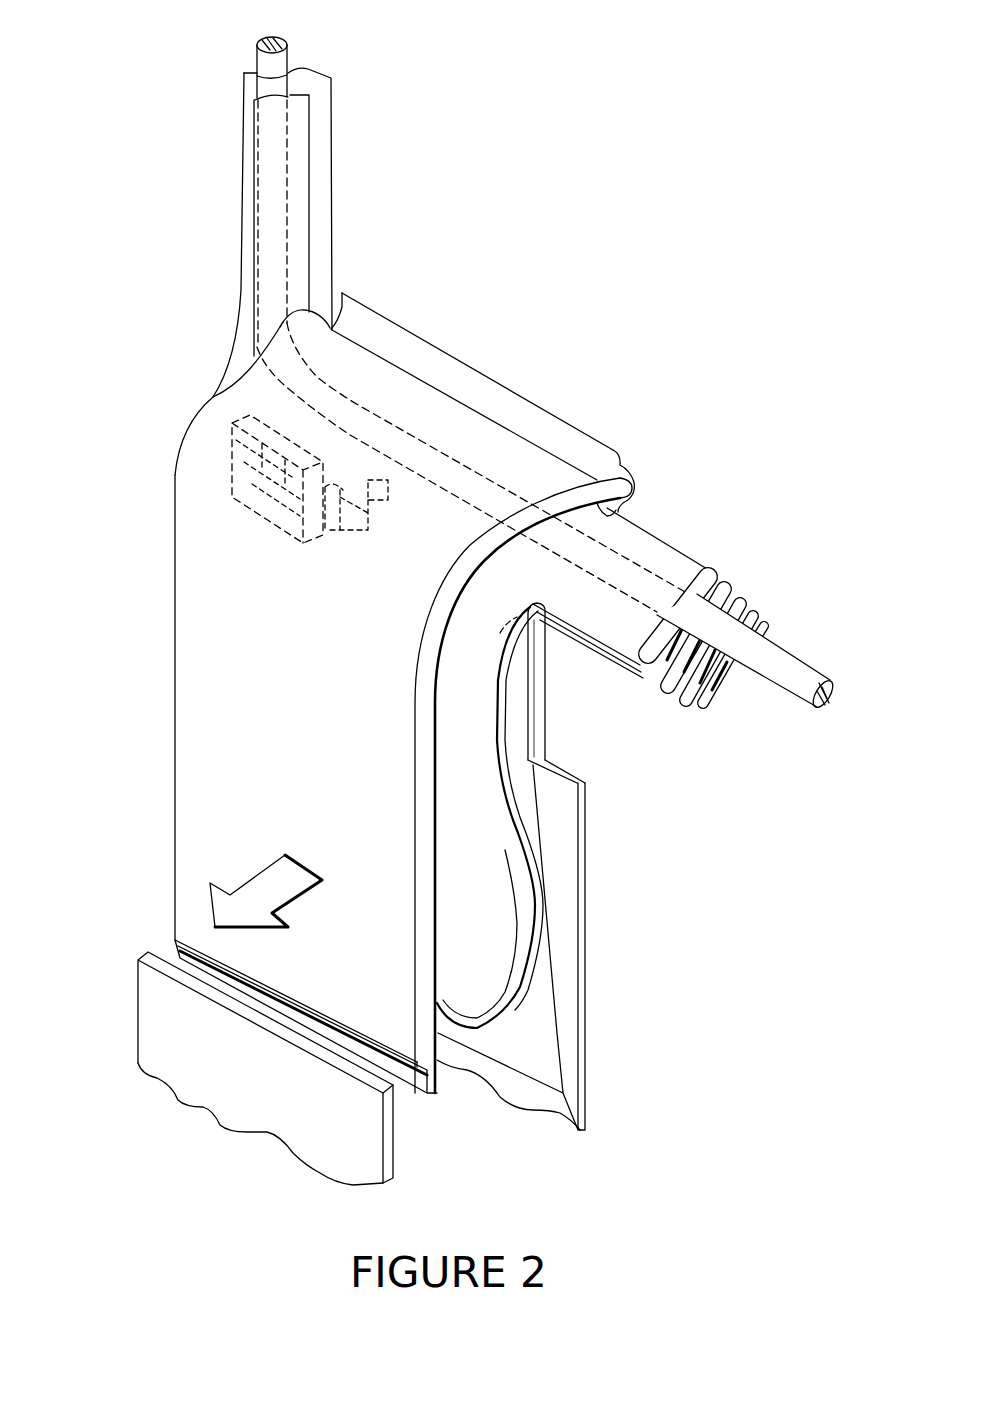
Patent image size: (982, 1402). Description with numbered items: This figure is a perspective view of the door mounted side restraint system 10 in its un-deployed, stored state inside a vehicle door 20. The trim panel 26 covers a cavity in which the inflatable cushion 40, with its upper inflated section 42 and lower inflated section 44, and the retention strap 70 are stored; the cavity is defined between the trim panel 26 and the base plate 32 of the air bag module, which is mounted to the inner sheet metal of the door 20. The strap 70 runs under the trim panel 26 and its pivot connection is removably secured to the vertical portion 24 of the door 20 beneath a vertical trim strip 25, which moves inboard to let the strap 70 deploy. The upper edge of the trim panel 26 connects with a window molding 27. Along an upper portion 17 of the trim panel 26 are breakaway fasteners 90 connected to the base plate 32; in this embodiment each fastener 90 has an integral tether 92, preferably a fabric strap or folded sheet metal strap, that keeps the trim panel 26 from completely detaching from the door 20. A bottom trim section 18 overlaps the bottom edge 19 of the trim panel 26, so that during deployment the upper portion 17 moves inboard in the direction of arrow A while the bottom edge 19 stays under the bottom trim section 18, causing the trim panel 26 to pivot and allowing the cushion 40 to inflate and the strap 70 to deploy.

The side restraint system 10 is at (136, 277).
The upper portion 17 is at (640, 487).
The bottom trim section 18 is at (248, 1115).
The bottom edge 19 is at (413, 1077).
The door 20 is at (587, 877).
The vertical portion 24 is at (320, 177).
The vertical trim strip 25 is at (255, 237).
The trim panel 26 is at (212, 713).
The window molding 27 is at (523, 420).
The base plate 32 is at (530, 1097).
The inflatable cushion 40 is at (673, 707).
The upper inflated section 42 is at (606, 620).
The lower inflated section 44 is at (480, 916).
The retention strap 70 is at (257, 60).
The breakaway fasteners 90 is at (240, 477).
The tether 92 is at (370, 530).